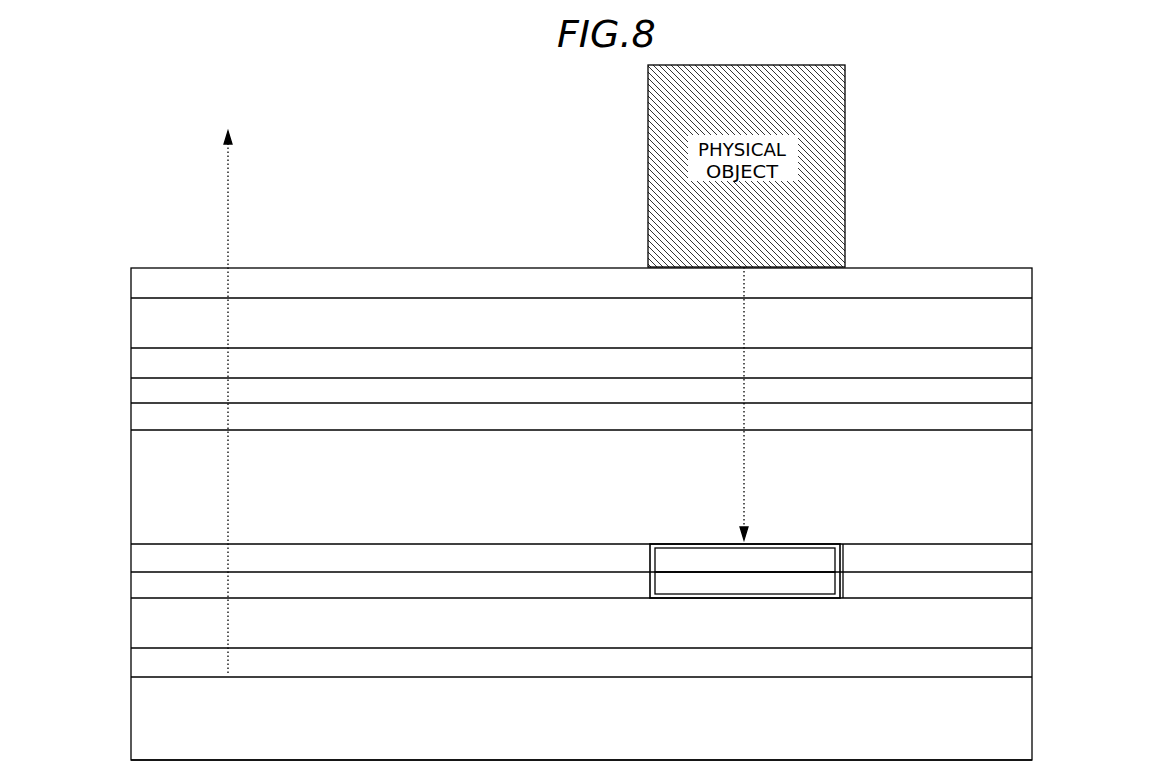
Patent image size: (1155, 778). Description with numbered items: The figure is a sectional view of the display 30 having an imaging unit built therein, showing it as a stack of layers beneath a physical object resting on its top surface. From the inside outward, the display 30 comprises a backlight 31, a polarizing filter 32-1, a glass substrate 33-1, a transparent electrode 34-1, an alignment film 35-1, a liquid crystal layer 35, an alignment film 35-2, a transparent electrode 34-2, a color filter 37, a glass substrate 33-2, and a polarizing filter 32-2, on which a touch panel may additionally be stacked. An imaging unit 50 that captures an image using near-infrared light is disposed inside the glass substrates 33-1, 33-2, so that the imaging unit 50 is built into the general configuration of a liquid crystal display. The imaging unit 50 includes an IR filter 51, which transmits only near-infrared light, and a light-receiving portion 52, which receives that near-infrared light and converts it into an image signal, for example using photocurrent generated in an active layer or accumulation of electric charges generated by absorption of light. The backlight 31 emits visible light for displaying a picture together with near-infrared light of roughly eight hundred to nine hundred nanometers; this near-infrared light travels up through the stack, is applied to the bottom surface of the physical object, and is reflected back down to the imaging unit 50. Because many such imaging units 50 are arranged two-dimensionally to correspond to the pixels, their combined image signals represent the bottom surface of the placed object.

The display having an imaging unit built therein 30 is at (128, 715).
The backlight 31 is at (1033, 719).
The polarizing filter 32-1 is at (1033, 663).
The polarizing filter 32-2 is at (1033, 280).
The glass substrate 33-1 is at (1033, 612).
The glass substrate 33-2 is at (1033, 322).
The transparent electrode 34-1 is at (1033, 583).
The transparent electrode 34-2 is at (1033, 390).
The liquid crystal 35 is at (1033, 452).
The alignment film 35-1 is at (1033, 556).
The alignment film 35-2 is at (1033, 415).
The color filter 37 is at (1033, 358).
The imaging unit 50 is at (793, 544).
The IR filter 51 is at (812, 560).
The light-receiving portion 52 is at (820, 598).